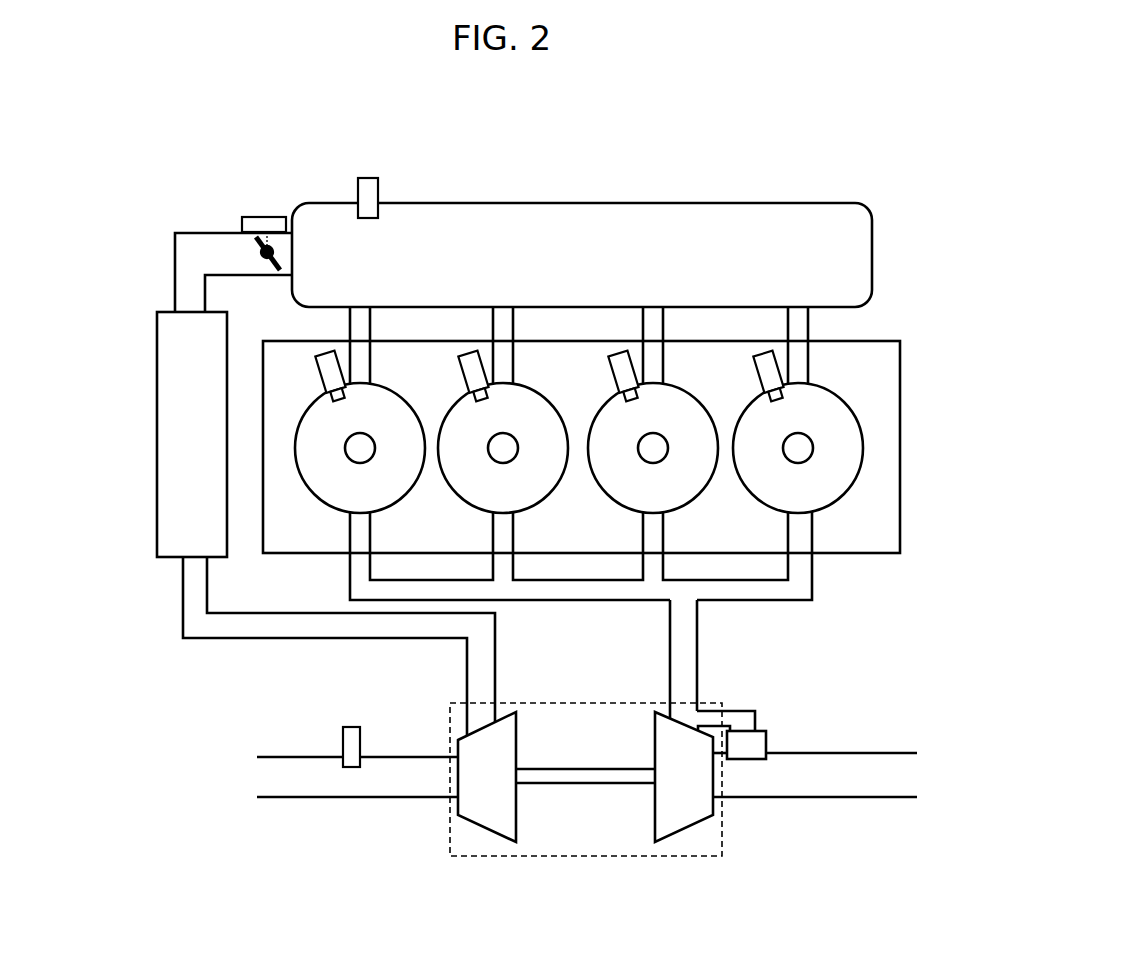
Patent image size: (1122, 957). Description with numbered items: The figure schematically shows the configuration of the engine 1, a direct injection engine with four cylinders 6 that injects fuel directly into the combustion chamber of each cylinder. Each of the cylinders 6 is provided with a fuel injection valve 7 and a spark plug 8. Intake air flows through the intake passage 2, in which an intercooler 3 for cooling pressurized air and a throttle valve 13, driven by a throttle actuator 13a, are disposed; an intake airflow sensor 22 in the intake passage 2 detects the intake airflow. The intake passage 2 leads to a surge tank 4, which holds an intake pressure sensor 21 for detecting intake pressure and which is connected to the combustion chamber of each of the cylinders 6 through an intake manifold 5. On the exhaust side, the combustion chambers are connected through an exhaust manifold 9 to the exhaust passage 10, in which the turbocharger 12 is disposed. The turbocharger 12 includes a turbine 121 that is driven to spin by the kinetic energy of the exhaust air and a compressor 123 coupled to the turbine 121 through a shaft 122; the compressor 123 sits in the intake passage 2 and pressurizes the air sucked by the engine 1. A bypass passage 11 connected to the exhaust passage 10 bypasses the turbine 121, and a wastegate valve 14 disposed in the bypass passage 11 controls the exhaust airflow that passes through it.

The engine 1 is at (888, 194).
The intake passage 2 is at (263, 640).
The intercooler 3 is at (157, 411).
The surge tank 4 is at (520, 203).
The intake manifold 5 is at (348, 327).
The cylinders 6 is at (380, 385).
The fuel injection valve 7 is at (318, 378).
The spark plug 8 is at (356, 437).
The exhaust manifold 9 is at (350, 568).
The exhaust passage 10 is at (699, 672).
The bypass passage 11 is at (756, 710).
The turbocharger 12 is at (546, 790).
The turbine 121 is at (686, 830).
The shaft 122 is at (583, 768).
The compressor 123 is at (480, 830).
The throttle valve 13 is at (259, 246).
The throttle actuator 13a is at (262, 216).
The wastegate valve 14 is at (768, 738).
The intake pressure sensor 21 is at (357, 186).
The intake airflow sensor 22 is at (343, 734).